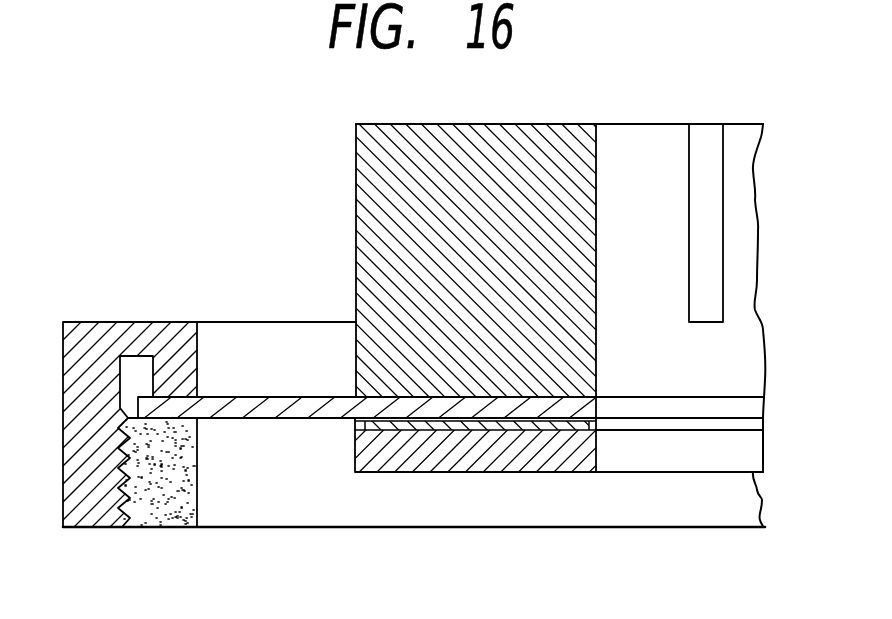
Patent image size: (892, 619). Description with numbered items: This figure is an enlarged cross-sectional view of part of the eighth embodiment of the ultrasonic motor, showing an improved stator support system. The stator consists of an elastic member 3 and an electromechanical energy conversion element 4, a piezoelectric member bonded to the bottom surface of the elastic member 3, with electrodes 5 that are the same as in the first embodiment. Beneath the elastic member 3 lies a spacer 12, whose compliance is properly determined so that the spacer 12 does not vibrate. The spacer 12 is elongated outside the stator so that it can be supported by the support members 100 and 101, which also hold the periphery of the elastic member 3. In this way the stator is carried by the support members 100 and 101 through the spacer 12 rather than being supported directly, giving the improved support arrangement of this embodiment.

The elastic member 3 is at (368, 186).
The electromechanical energy conversion element 4 is at (432, 460).
The electrodes 5 is at (564, 425).
The spacer 12 is at (753, 405).
The support member 100 is at (100, 333).
The support member 101 is at (153, 513).